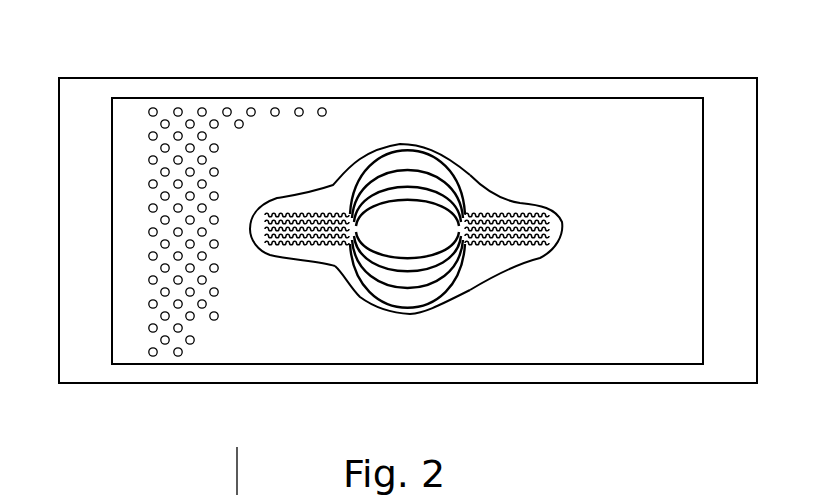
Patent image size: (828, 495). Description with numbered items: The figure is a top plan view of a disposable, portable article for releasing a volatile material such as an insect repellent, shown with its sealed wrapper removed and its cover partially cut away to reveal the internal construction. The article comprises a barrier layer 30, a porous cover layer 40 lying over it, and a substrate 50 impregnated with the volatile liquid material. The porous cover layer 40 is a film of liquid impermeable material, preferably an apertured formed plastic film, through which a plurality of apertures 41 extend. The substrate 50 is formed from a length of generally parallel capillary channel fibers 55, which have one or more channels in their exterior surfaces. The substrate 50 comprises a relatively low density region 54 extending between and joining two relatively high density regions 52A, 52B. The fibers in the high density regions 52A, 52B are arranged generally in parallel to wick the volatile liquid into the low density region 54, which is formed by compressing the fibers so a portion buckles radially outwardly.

The barrier layer 30 is at (478, 200).
The porous cover layer 40 is at (262, 162).
The apertures 41 is at (153, 108).
The substrate 50 is at (368, 237).
The relatively high density region 52A is at (329, 270).
The relatively high density region 52B is at (530, 274).
The relatively low density region 54 is at (426, 328).
The capillary channel fibers 55 is at (398, 150).